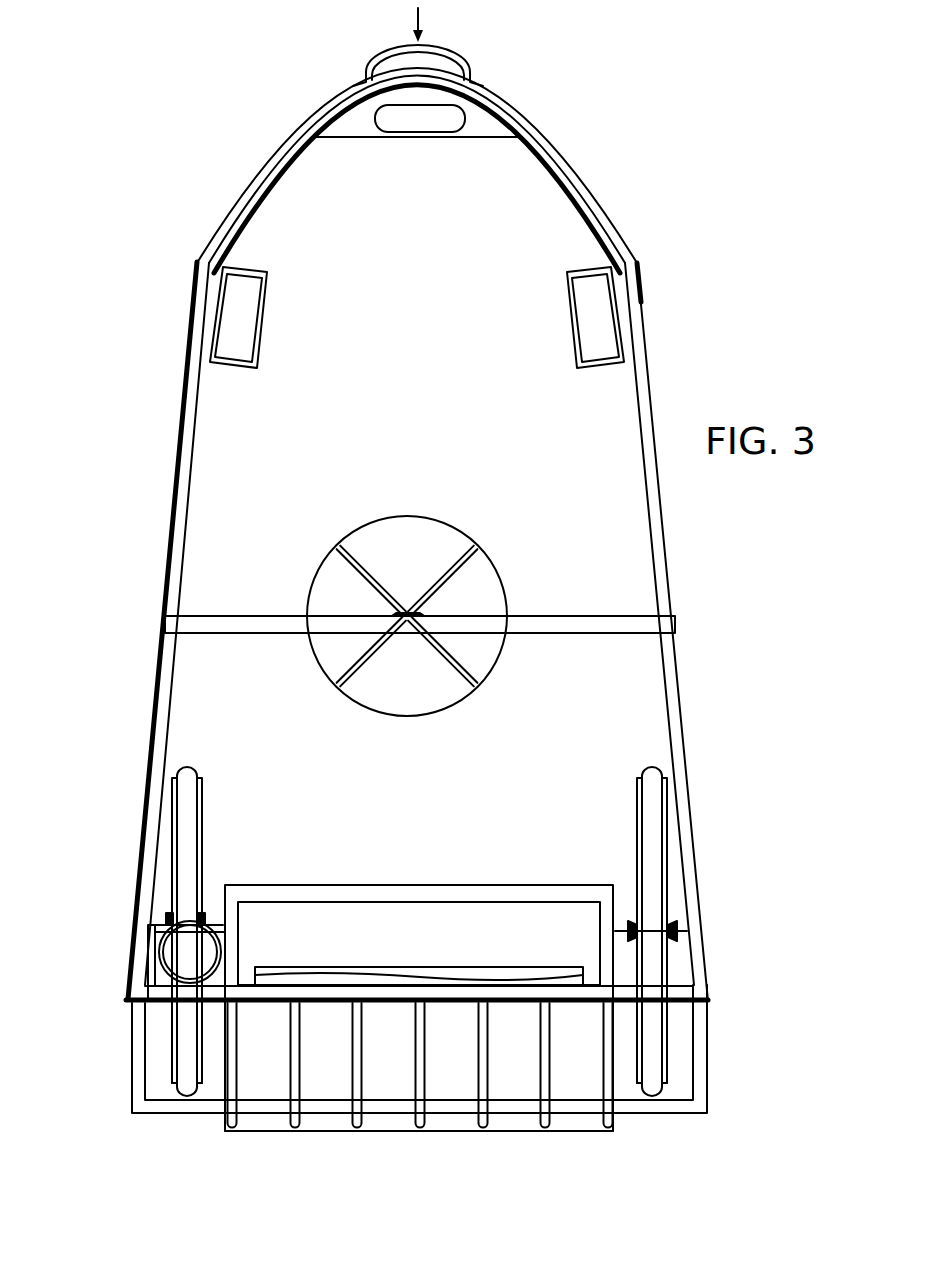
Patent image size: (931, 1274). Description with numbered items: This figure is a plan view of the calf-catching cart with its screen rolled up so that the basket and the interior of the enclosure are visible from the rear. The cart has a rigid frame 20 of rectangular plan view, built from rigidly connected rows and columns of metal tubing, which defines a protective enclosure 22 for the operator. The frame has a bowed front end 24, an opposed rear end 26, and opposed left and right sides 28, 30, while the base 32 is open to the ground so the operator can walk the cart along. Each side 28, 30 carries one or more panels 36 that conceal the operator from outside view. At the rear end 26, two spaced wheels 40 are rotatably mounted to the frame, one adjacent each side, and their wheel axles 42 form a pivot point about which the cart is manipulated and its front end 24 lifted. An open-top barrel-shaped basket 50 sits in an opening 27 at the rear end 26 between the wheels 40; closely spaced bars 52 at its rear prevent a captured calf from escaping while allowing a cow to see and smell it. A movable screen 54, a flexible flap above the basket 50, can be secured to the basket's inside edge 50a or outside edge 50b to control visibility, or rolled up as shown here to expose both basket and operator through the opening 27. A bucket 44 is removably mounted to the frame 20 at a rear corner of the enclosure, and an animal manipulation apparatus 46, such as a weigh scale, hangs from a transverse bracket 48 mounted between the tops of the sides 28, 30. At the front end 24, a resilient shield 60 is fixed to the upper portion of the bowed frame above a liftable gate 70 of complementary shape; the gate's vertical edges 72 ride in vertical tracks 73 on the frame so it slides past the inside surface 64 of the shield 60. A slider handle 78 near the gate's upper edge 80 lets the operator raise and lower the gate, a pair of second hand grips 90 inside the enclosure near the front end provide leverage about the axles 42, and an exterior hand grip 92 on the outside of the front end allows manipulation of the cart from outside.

The rigid frame 20 is at (165, 662).
The protective enclosure 22 is at (408, 363).
The front end 24 is at (426, 14).
The rear end 26 is at (655, 1121).
The opening 27 is at (268, 1008).
The left side 28 is at (160, 578).
The right side 30 is at (683, 576).
The base 32 is at (270, 472).
The panels 36 is at (180, 490).
The wheels 40 is at (187, 777).
The wheel axles 42 is at (680, 926).
The bucket 44 is at (195, 948).
The animal manipulation apparatus 46 is at (390, 563).
The transverse bracket 48 is at (565, 635).
The basket 50 is at (406, 940).
The inside edge of basket 50a is at (366, 885).
The outside edge of basket 50b is at (522, 1122).
The bars 52 is at (358, 1040).
The movable screen 54 is at (317, 964).
The shield 60 is at (627, 209).
The inside surface of shield 64 is at (555, 144).
The gate 70 is at (286, 200).
The vertical edges of gate 72 is at (226, 264).
The vertical tracks 73 is at (214, 296).
The slider handle 78 is at (352, 122).
The upper edge of gate 80 is at (303, 150).
The second hand grips 90 is at (226, 370).
The exterior hand grip 92 is at (380, 52).